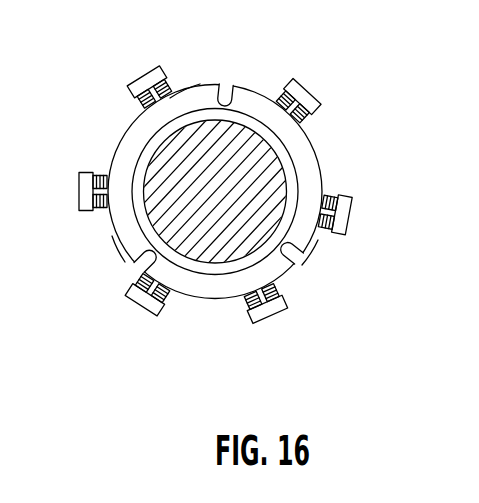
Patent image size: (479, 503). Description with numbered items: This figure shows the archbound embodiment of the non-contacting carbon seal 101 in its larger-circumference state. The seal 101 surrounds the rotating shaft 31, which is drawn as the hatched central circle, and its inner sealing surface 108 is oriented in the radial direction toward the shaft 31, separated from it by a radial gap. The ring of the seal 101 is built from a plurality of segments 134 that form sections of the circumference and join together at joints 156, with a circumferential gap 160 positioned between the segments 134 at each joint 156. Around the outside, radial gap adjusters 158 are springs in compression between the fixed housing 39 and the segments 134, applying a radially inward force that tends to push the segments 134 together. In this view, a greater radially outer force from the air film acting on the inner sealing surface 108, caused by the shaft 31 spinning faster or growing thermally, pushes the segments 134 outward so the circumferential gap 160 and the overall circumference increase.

The non-contacting carbon seal 101 is at (63, 75).
The inner sealing surface 108 is at (168, 130).
The segments 134 is at (134, 130).
The rotating shaft 31 is at (155, 177).
The circumferential gap 160 is at (227, 73).
The radial gap adjuster 158 is at (180, 72).
The joints 156 is at (112, 262).
The fixed housing 39 is at (313, 94).